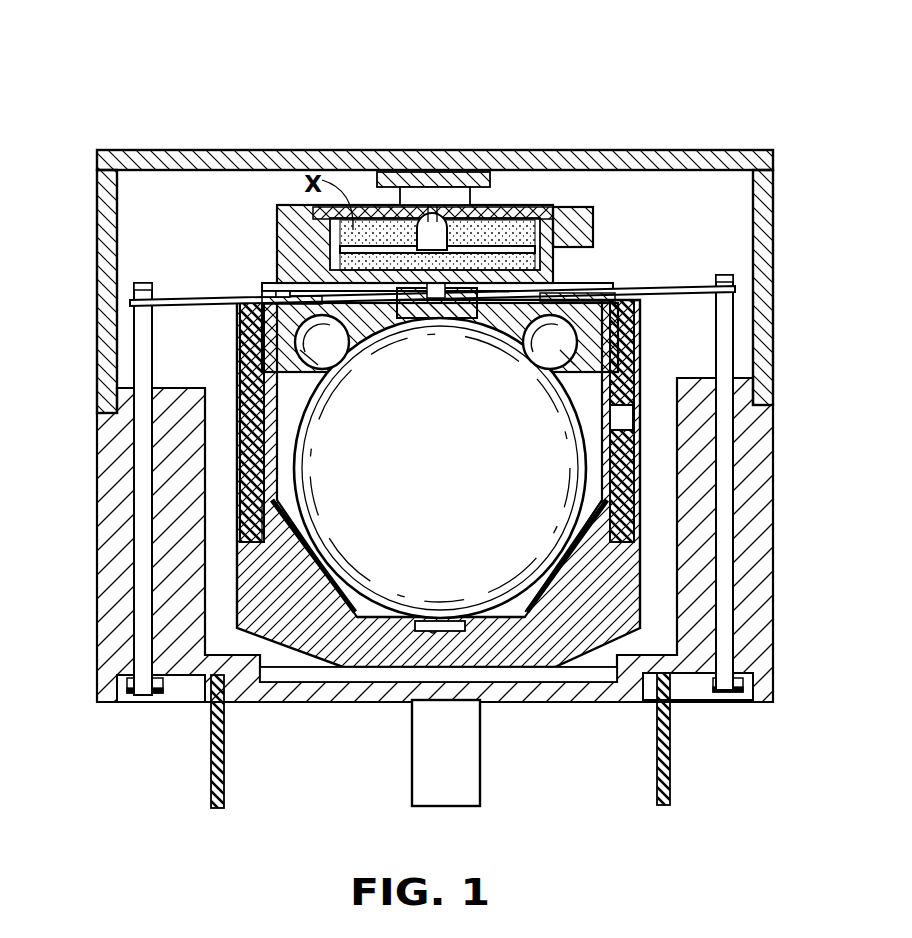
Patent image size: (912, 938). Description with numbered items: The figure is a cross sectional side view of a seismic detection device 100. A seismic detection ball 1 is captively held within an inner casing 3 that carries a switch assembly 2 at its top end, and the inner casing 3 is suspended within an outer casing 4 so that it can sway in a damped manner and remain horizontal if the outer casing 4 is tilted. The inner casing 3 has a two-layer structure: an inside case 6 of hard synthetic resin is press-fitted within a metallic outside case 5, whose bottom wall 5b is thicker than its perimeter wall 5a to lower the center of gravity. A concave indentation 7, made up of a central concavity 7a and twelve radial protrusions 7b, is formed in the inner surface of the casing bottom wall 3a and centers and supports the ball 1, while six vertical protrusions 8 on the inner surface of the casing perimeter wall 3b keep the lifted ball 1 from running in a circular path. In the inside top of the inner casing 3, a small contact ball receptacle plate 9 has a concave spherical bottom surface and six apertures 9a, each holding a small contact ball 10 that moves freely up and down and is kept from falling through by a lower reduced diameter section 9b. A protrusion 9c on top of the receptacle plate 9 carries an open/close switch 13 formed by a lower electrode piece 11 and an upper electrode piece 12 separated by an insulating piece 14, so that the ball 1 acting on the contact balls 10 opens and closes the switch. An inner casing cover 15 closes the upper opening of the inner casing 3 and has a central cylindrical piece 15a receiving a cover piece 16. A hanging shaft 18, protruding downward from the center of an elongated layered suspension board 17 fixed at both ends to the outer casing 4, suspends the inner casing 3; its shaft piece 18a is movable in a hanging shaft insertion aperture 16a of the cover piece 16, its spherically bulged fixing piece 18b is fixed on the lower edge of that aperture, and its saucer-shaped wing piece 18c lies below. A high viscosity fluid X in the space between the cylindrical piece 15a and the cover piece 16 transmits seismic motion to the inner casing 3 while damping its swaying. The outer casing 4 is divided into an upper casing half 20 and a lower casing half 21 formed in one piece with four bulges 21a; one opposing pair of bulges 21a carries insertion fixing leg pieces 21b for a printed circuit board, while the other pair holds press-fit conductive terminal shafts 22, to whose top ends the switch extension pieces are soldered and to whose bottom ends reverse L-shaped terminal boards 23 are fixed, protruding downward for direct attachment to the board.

The seismic detection device 100 is at (769, 82).
The seismic detection ball 1 is at (538, 560).
The switch assembly 2 is at (612, 152).
The inner casing 3 is at (655, 520).
The casing bottom wall 3a is at (490, 657).
The casing perimeter wall 3b is at (632, 570).
The outer casing 4 is at (479, 436).
The outside case 5 is at (637, 332).
The perimeter wall 5a is at (633, 372).
The bottom wall 5b is at (527, 657).
The inside case 6 is at (618, 384).
The concave indentation 7 is at (345, 655).
The concavity 7a is at (396, 690).
The radial protrusions 7b is at (412, 625).
The vertical protrusions 8 is at (282, 472).
The small contact ball receptacle plate 9 is at (414, 324).
The apertures 9a is at (262, 302).
The lower reduced diameter section 9b is at (320, 368).
The protrusion 9c is at (445, 300).
The small contact ball 10 is at (332, 352).
The lower electrode piece 11 is at (264, 292).
The upper electrode piece 12 is at (285, 290).
The open/close switch 13 is at (288, 98).
The insulating piece 14 is at (465, 285).
The inner casing cover 15 is at (565, 196).
The cylindrical piece 15a is at (590, 222).
The cover piece 16 is at (392, 228).
The hanging shaft insertion aperture 16a is at (405, 213).
The layered suspension board 17 is at (380, 250).
The hanging shaft 18 is at (445, 48).
The shaft piece 18a is at (428, 178).
The fixing piece 18b is at (437, 185).
The wing piece 18c is at (448, 216).
The upper casing half 20 is at (757, 393).
The lower casing half 21 is at (832, 372).
The bulges 21a is at (768, 645).
The insertion fixing leg pieces 21b is at (480, 790).
The conductive terminal shafts 22 is at (735, 600).
The reverse L-shaped terminal boards 23 is at (212, 750).